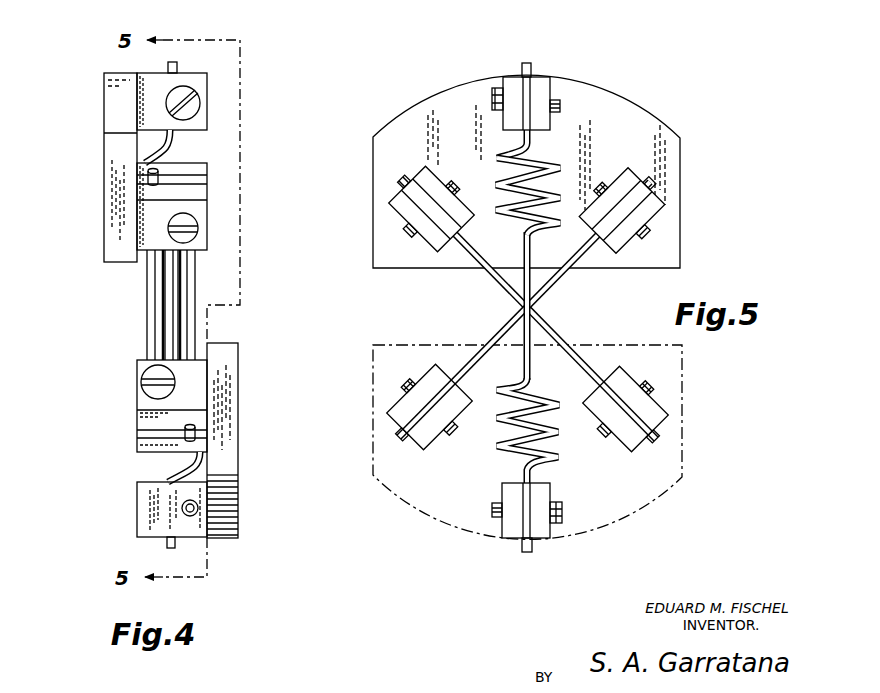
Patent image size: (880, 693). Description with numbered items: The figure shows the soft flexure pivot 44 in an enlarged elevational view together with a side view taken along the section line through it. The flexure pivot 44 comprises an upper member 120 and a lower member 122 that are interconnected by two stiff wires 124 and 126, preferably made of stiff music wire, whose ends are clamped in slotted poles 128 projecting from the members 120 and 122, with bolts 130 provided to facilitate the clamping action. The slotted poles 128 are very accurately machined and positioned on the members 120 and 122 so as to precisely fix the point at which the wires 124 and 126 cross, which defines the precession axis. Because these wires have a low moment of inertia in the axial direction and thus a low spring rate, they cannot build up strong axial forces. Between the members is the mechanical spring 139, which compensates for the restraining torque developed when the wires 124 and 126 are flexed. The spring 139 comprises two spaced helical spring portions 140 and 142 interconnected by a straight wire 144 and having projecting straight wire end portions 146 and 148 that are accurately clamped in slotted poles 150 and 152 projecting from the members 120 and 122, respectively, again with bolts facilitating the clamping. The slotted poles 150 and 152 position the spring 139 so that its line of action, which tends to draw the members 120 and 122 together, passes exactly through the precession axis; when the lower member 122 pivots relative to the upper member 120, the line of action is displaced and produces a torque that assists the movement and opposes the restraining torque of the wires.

In FIG. 4, the flexure pivot 44 is at (100, 110).
In FIG. 4, the upper member 120 is at (105, 200).
In FIG. 5, the upper member 120 is at (682, 160).
In FIG. 4, the lower member 122 is at (233, 362).
In FIG. 5, the lower member 122 is at (685, 468).
In FIG. 4, the stiff wire 124 is at (148, 277).
In FIG. 5, the stiff wire 124 is at (488, 275).
In FIG. 4, the stiff wire 126 is at (197, 277).
In FIG. 4, the slotted pole 128 is at (208, 193).
In FIG. 5, the slotted pole 128 is at (397, 197).
In FIG. 4, the bolt 130 is at (148, 372).
In FIG. 5, the bolt 130 is at (397, 227).
In FIG. 5, the mechanical spring 139 is at (497, 148).
In FIG. 5, the helical spring portion 140 is at (558, 160).
In FIG. 5, the helical spring portion 142 is at (540, 400).
In FIG. 4, the straight wire 144 is at (172, 320).
In FIG. 5, the straight wire 144 is at (533, 333).
In FIG. 5, the straight wire end portion 146 is at (535, 70).
In FIG. 5, the straight wire end portion 148 is at (522, 545).
In FIG. 5, the slotted pole 150 is at (512, 80).
In FIG. 4, the slotted pole 152 is at (140, 500).
In FIG. 5, the slotted pole 152 is at (548, 492).